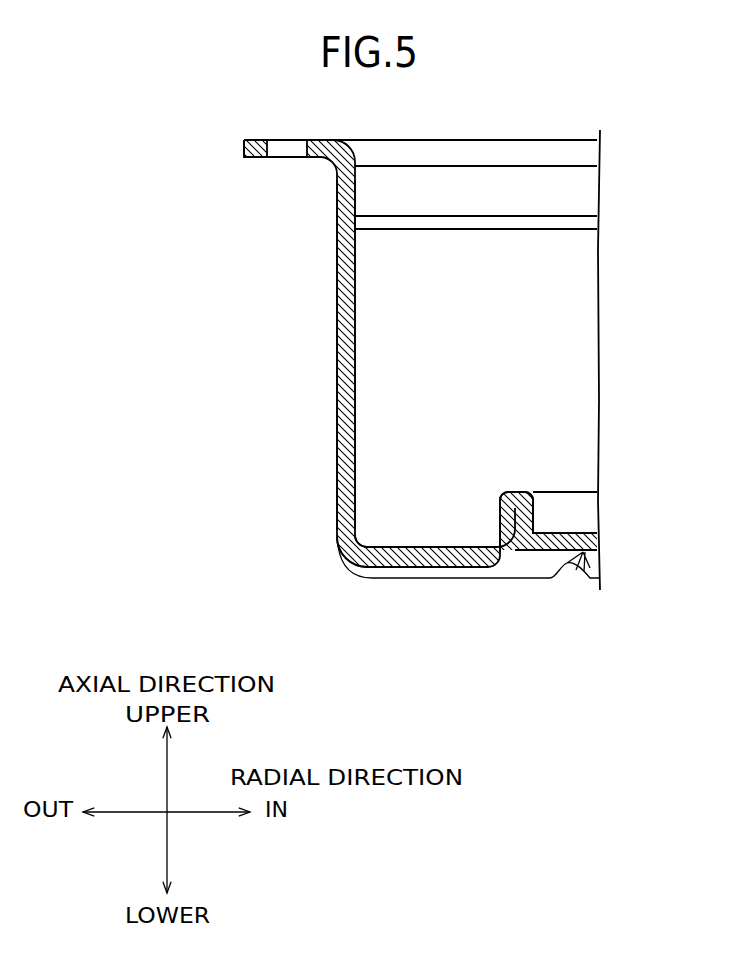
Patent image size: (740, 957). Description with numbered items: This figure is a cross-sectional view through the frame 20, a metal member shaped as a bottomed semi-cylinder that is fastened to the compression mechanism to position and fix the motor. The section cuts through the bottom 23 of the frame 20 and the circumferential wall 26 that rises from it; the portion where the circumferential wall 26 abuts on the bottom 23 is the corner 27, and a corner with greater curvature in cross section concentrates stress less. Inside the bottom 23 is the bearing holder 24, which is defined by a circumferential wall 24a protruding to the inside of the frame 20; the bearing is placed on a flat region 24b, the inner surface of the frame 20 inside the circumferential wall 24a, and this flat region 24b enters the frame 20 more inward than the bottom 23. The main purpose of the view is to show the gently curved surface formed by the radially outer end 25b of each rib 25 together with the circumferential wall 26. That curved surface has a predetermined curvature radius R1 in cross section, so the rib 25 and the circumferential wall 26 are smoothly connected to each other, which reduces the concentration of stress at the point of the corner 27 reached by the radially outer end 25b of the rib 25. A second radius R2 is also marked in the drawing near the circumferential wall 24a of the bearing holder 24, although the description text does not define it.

The frame 20 is at (218, 238).
The bottom 23 is at (430, 578).
The bearing holder 24 is at (578, 520).
The circumferential wall 24a is at (517, 490).
The flat region 24b is at (600, 573).
The rib 25 is at (405, 556).
The radially outer end 25b is at (362, 573).
The circumferential wall 26 is at (337, 356).
The corner 27 is at (340, 572).
The curvature radius R1 is at (367, 538).
The projection bend radius R2 is at (533, 532).